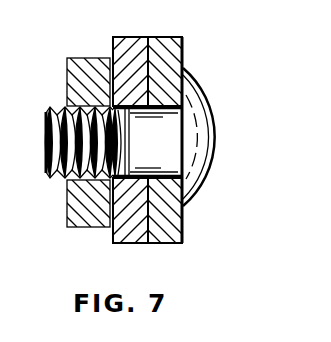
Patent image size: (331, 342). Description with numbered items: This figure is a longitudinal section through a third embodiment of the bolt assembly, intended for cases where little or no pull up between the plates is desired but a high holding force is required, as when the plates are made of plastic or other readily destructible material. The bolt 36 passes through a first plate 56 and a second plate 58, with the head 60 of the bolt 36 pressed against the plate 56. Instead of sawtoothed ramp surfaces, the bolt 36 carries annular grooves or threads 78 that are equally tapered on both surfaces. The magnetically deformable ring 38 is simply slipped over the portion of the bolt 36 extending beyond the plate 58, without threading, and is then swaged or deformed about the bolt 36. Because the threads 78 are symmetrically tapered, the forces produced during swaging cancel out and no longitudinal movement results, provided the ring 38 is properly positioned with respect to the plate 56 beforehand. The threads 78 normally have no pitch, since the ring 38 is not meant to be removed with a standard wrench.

The magnetically deformable ring 38 is at (95, 86).
The second plate 58 is at (139, 82).
The first plate 56 is at (171, 82).
The bolt 36 is at (161, 157).
The head 60 is at (204, 129).
The threads 78 is at (47, 179).